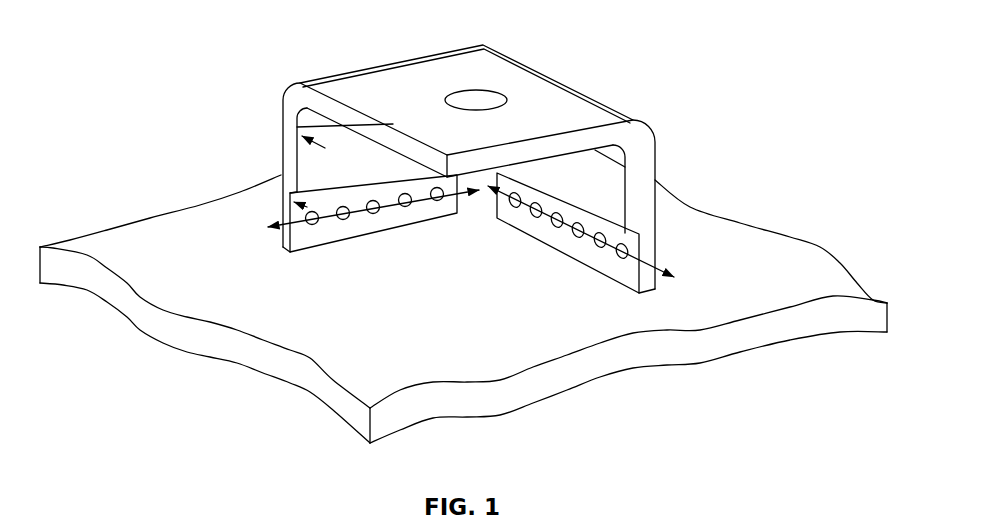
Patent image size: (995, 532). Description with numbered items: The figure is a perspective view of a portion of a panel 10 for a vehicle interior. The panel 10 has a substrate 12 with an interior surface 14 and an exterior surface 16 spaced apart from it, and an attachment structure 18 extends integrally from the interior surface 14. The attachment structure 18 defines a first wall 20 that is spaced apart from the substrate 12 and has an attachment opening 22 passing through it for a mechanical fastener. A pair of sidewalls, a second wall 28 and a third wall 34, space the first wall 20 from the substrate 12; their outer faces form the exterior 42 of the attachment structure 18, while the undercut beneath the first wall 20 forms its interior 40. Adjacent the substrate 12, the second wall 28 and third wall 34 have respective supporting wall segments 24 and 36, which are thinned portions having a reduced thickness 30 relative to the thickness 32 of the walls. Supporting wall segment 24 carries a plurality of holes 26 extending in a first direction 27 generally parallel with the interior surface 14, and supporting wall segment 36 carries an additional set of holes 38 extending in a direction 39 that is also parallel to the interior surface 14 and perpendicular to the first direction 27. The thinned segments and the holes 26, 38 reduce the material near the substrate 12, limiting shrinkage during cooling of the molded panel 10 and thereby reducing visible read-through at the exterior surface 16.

The panel 10 is at (801, 112).
The substrate 12 is at (742, 346).
The interior surface 14 is at (812, 262).
The exterior surface 16 is at (606, 397).
The attachment structure 18 is at (228, 127).
The first wall 20 is at (477, 63).
The attachment opening 22 is at (476, 100).
The supporting wall segment 24 is at (310, 245).
The holes 26 is at (468, 229).
The first direction 27 is at (297, 250).
The second wall 28 is at (290, 168).
The reduced thickness 30 is at (279, 190).
The thickness 32 is at (281, 126).
The third wall 34 is at (643, 170).
The supporting wall segment 36 is at (655, 284).
The holes 38 is at (518, 193).
The direction 39 is at (670, 272).
The interior 40 is at (494, 235).
The exterior 42 is at (630, 84).